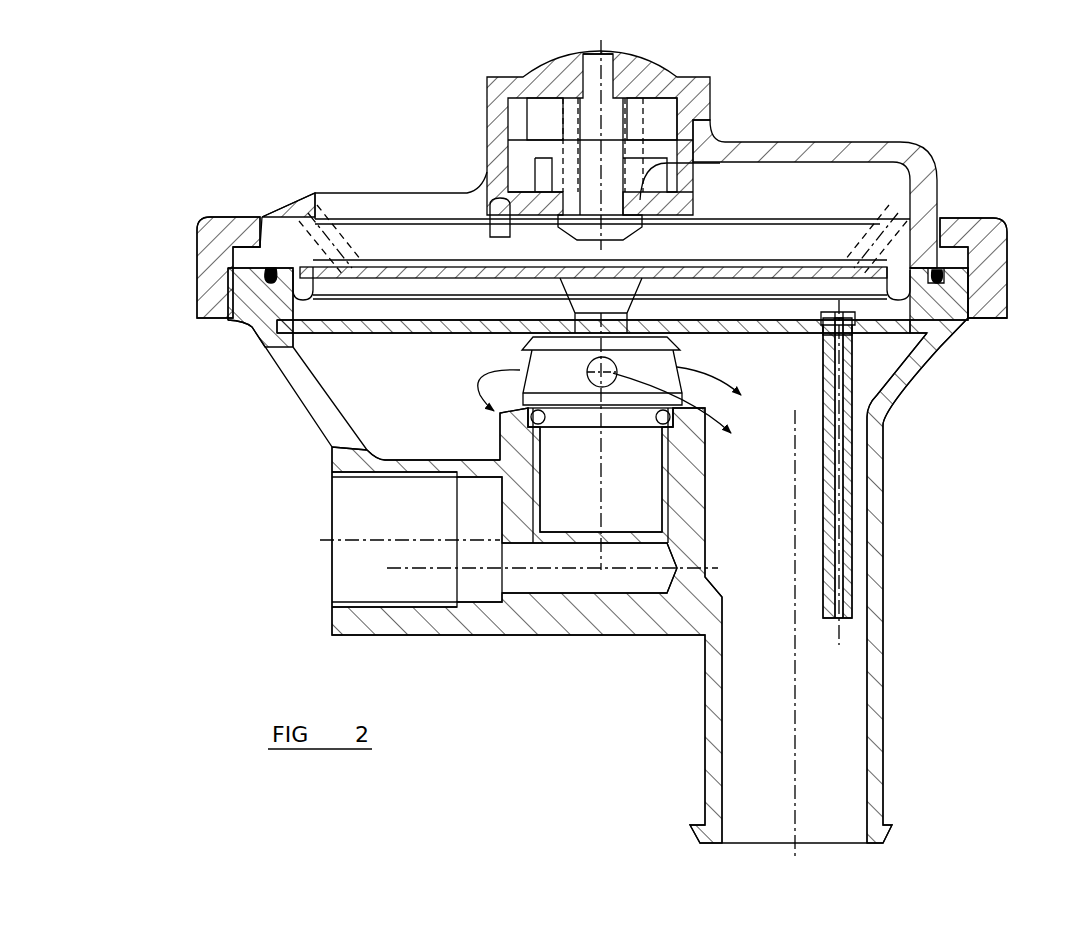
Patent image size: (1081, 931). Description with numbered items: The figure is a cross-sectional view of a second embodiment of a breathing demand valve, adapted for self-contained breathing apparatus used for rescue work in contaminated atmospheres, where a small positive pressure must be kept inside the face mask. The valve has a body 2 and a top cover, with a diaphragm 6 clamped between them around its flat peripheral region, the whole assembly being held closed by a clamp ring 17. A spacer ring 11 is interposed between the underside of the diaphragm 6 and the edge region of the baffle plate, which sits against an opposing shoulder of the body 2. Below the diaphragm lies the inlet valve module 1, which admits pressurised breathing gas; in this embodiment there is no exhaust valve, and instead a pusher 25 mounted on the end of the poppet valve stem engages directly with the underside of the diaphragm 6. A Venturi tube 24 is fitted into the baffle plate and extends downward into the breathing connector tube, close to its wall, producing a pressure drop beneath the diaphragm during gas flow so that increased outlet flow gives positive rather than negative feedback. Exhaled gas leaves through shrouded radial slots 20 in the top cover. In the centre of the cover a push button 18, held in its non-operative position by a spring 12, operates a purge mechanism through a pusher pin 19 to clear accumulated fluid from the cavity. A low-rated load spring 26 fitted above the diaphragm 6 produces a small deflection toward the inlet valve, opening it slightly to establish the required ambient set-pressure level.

The inlet valve module 1 is at (625, 487).
The body 2 is at (587, 327).
The diaphragm 6 is at (820, 283).
The spacer ring 11 is at (282, 292).
The spring 12 is at (523, 77).
The clamp ring 17 is at (995, 218).
The push button 18 is at (558, 122).
The pusher pin 19 is at (593, 75).
The shrouded radial slots 20 is at (890, 142).
The Venturi tube 24 is at (853, 578).
The pusher 25 is at (568, 302).
The load spring 26 is at (330, 236).